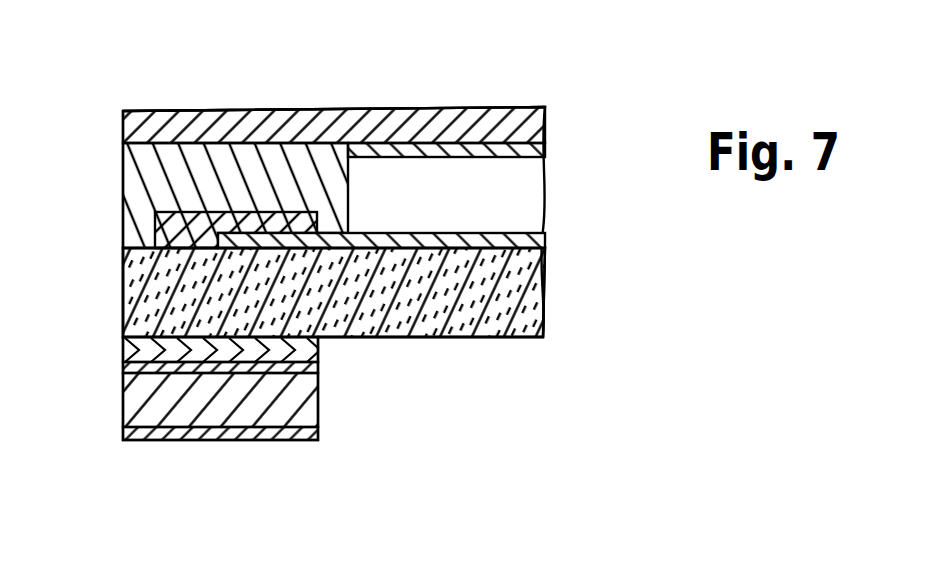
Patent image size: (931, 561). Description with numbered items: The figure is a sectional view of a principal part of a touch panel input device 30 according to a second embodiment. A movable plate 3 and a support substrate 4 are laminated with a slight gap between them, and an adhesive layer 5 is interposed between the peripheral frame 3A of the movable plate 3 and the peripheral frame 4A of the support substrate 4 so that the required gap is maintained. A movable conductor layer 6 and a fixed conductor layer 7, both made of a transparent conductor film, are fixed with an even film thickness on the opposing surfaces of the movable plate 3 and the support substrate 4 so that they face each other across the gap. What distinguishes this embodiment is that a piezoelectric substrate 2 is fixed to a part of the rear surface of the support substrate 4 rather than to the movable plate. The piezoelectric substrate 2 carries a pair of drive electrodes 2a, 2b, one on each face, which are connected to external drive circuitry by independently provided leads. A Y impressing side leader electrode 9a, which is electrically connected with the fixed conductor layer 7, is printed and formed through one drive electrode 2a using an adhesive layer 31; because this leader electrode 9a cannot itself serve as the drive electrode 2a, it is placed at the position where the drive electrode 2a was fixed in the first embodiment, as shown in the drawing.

The touch panel input device 30 is at (583, 88).
The movable plate 3 is at (483, 120).
The frame 3A is at (203, 123).
The adhesive layer 5 is at (148, 182).
The movable conductor layer 6 is at (507, 157).
The fixed conductor layer 7 is at (517, 232).
The Y impressing side leader electrode 9a is at (193, 227).
The frame 4A is at (177, 300).
The support substrate 4 is at (487, 285).
The adhesive layer 31 is at (138, 352).
The piezoelectric substrate 2 is at (298, 395).
The drive electrode 2a is at (311, 381).
The drive electrode 2b is at (318, 435).